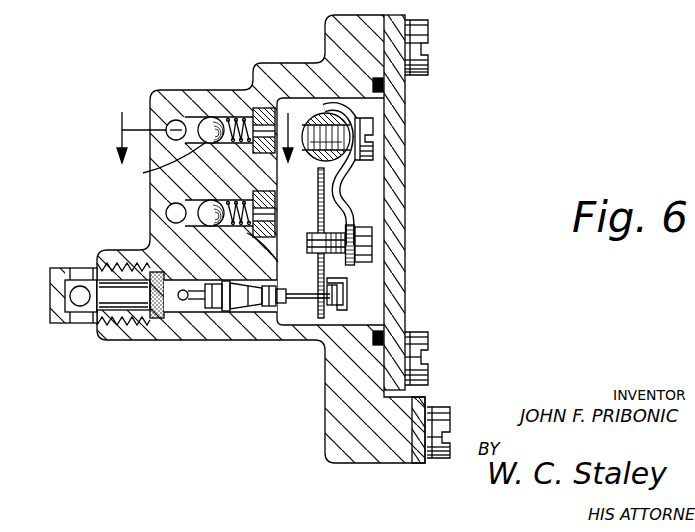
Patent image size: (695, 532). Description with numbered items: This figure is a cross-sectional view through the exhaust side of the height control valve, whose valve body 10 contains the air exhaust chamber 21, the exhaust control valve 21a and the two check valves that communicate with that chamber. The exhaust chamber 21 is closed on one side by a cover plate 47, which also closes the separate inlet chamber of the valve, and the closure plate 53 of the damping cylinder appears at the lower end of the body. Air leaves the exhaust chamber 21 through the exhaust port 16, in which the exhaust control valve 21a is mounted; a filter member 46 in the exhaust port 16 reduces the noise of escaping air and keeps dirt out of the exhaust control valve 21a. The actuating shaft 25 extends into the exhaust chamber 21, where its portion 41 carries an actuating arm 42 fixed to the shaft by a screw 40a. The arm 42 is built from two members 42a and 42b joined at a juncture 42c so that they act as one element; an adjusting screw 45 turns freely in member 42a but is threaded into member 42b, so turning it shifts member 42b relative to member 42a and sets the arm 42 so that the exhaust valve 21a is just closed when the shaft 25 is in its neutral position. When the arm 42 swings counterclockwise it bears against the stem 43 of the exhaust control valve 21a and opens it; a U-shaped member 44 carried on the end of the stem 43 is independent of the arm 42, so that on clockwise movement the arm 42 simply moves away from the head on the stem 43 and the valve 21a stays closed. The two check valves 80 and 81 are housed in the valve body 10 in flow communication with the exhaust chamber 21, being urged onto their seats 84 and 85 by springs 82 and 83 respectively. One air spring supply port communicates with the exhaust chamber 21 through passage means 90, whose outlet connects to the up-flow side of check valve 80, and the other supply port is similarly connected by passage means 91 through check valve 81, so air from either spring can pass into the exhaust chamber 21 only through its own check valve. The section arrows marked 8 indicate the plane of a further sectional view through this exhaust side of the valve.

The valve body 10 is at (151, 98).
The exhaust chamber 21 is at (370, 197).
The exhaust control valve 21a is at (250, 311).
The exhaust port 16 is at (68, 270).
The filter member 46 is at (159, 319).
The valve stem 43 is at (306, 304).
The U-shaped member 44 is at (348, 306).
The actuating arm 42 is at (358, 183).
The arm member 42a is at (354, 214).
The arm member 42b is at (323, 270).
The juncture 42c is at (318, 172).
The adjusting screw 45 is at (366, 238).
The actuating shaft 25 is at (318, 118).
The shaft portion 41 is at (333, 123).
The screw 40a is at (373, 133).
The cover plate 47 is at (397, 90).
The closure plate 53 is at (418, 452).
The passage means 90 is at (180, 120).
The check valve 80 is at (210, 117).
The spring 82 is at (241, 118).
The check valve seat 84 is at (161, 167).
The check valve seat 85 is at (170, 203).
The check valve 81 is at (203, 212).
The passage means 91 is at (178, 219).
The spring 83 is at (277, 254).
The section line 8- 8 is at (190, 152).